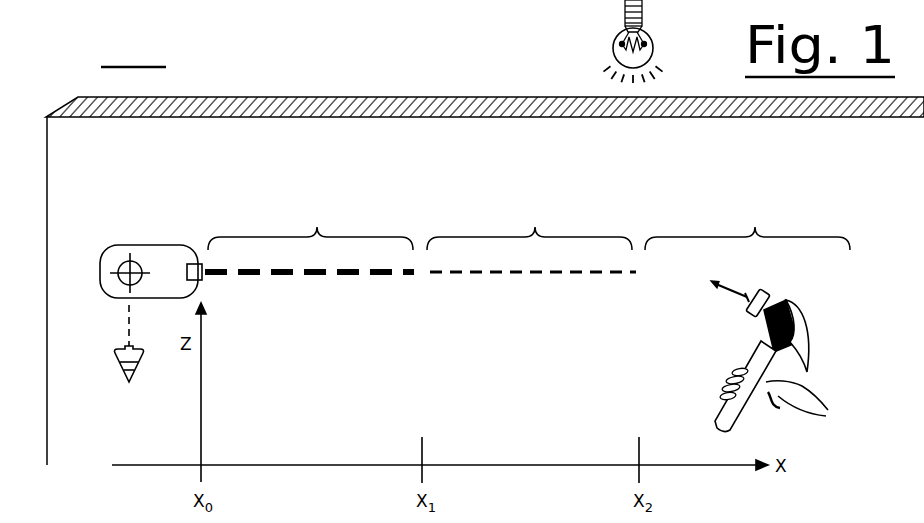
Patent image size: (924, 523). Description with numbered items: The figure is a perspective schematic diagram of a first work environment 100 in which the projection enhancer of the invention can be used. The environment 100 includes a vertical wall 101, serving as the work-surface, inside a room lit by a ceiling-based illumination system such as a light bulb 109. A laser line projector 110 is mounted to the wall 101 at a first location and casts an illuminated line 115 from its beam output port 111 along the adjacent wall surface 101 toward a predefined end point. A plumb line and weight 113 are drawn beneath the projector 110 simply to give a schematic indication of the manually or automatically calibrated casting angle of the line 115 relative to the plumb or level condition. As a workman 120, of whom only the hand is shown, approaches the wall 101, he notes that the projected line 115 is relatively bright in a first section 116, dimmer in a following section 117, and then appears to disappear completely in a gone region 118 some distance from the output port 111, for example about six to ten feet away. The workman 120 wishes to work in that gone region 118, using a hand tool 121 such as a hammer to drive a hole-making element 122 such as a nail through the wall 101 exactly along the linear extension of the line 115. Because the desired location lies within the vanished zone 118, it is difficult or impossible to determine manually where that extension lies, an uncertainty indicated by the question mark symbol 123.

The environment 100 is at (106, 247).
The vertical wall 101 is at (323, 108).
The light bulb 109 is at (592, 52).
The laser line projector 110 is at (153, 246).
The beam output port 111 is at (201, 252).
The plumb line and weight 113 is at (131, 388).
The illuminated line 115 is at (410, 283).
The bright section 116 is at (310, 213).
The dimmer section 117 is at (529, 213).
The gone region 118 is at (747, 213).
The workman 120 is at (820, 408).
The hand tool 121 is at (813, 322).
The hole-making element 122 is at (725, 301).
The question mark symbol 123 is at (679, 289).